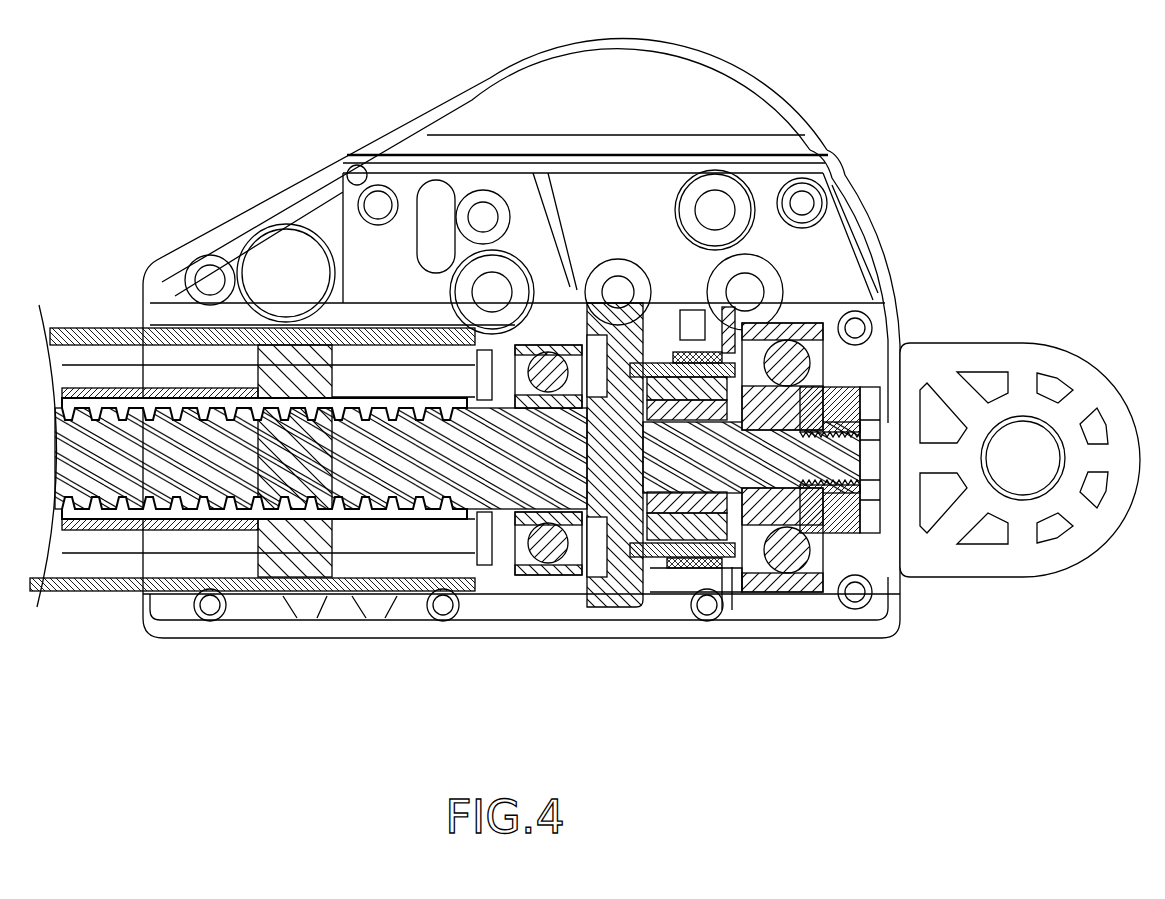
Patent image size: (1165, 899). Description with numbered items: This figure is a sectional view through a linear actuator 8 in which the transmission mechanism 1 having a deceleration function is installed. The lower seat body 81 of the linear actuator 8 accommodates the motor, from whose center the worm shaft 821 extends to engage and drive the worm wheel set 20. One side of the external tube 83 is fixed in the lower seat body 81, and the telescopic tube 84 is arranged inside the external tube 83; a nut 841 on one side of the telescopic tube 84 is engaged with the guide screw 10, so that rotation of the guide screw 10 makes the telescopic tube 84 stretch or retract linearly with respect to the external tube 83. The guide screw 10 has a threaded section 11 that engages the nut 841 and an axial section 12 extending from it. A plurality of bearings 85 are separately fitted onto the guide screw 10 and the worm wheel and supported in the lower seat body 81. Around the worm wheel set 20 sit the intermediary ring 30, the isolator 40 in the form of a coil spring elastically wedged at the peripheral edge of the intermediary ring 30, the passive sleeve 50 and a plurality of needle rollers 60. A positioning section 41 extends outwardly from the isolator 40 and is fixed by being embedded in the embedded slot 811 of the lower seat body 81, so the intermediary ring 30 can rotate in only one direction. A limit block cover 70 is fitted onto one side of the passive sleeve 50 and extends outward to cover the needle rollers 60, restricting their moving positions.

The linear actuator 8 is at (903, 54).
The lower seat body 81 is at (847, 192).
The embedded slot 811 is at (680, 317).
The worm shaft 821 is at (617, 290).
The external tube 83 is at (95, 338).
The telescopic tube 84 is at (105, 530).
The nut 841 is at (300, 565).
The guide screw 10 is at (440, 515).
The threaded section 11 is at (385, 512).
The axial section 12 is at (590, 580).
The worm wheel set 20 is at (608, 613).
The intermediary ring 30 is at (630, 600).
The isolator 40 is at (703, 567).
The positioning section 41 is at (740, 330).
The passive sleeve 50 is at (830, 388).
The needle rollers 60 is at (657, 567).
The limit block cover 70 is at (752, 592).
The bearings 85 is at (525, 580).
The transmission mechanism 1 is at (685, 578).